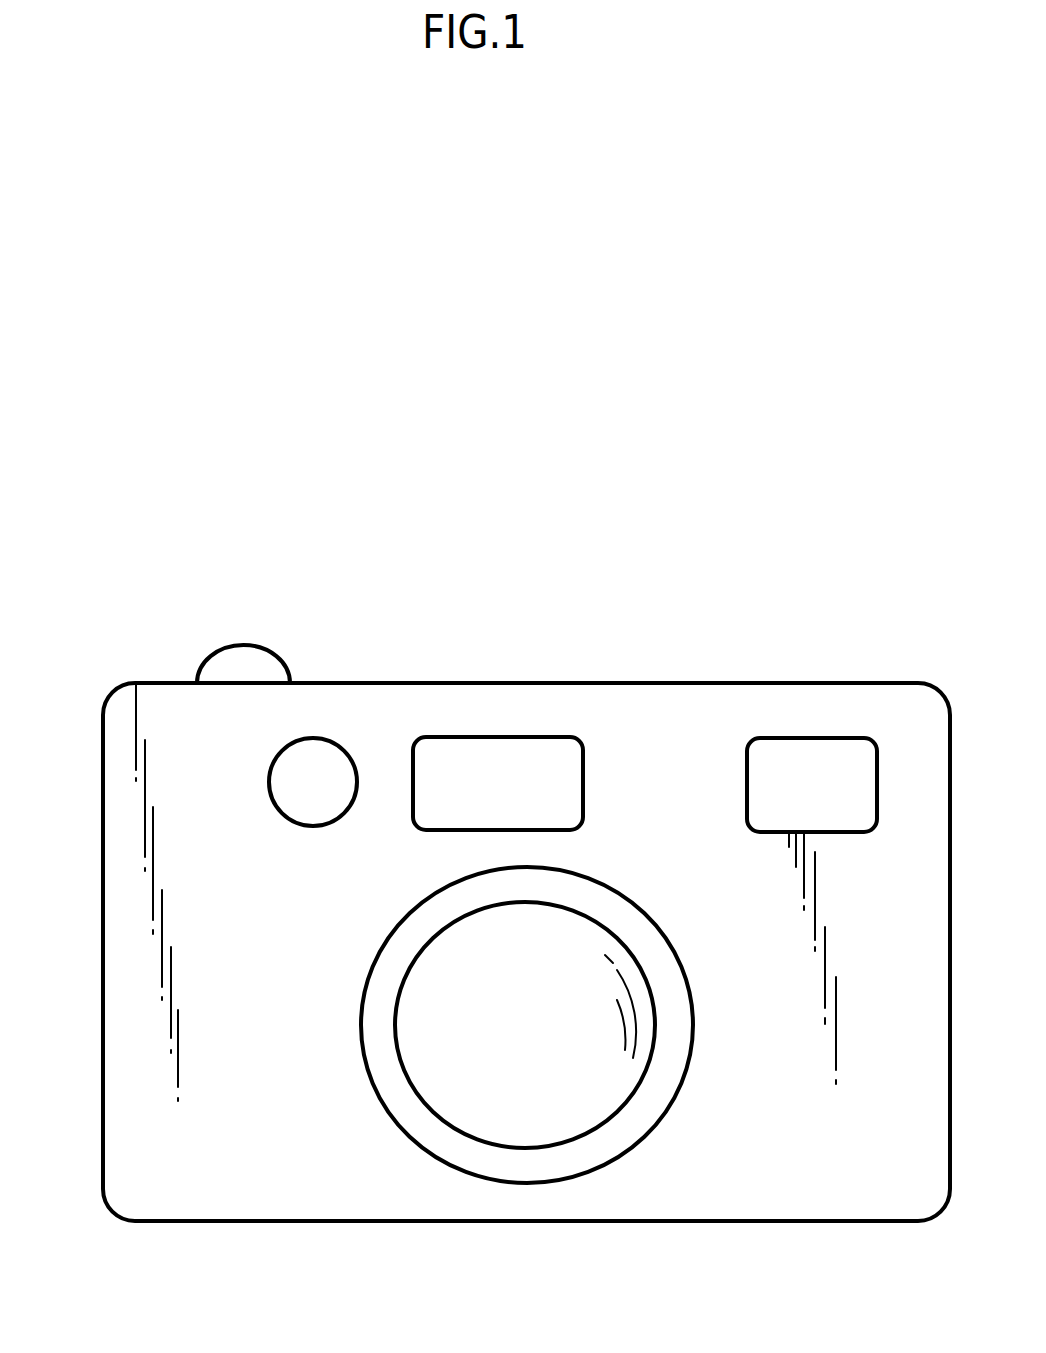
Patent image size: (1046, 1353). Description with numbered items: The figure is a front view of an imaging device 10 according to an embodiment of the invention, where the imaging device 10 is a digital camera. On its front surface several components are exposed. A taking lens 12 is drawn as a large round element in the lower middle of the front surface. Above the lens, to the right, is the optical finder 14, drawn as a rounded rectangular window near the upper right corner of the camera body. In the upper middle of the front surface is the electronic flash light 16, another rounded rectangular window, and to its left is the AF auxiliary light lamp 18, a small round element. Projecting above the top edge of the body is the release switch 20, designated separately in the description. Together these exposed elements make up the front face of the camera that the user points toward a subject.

The imaging device 10 is at (142, 533).
The taking lens 12 is at (360, 1025).
The optical finder 14 is at (820, 738).
The electronic flash light 16 is at (489, 737).
The AF auxiliary light lamp 18 is at (338, 748).
The release switch 20 is at (241, 645).